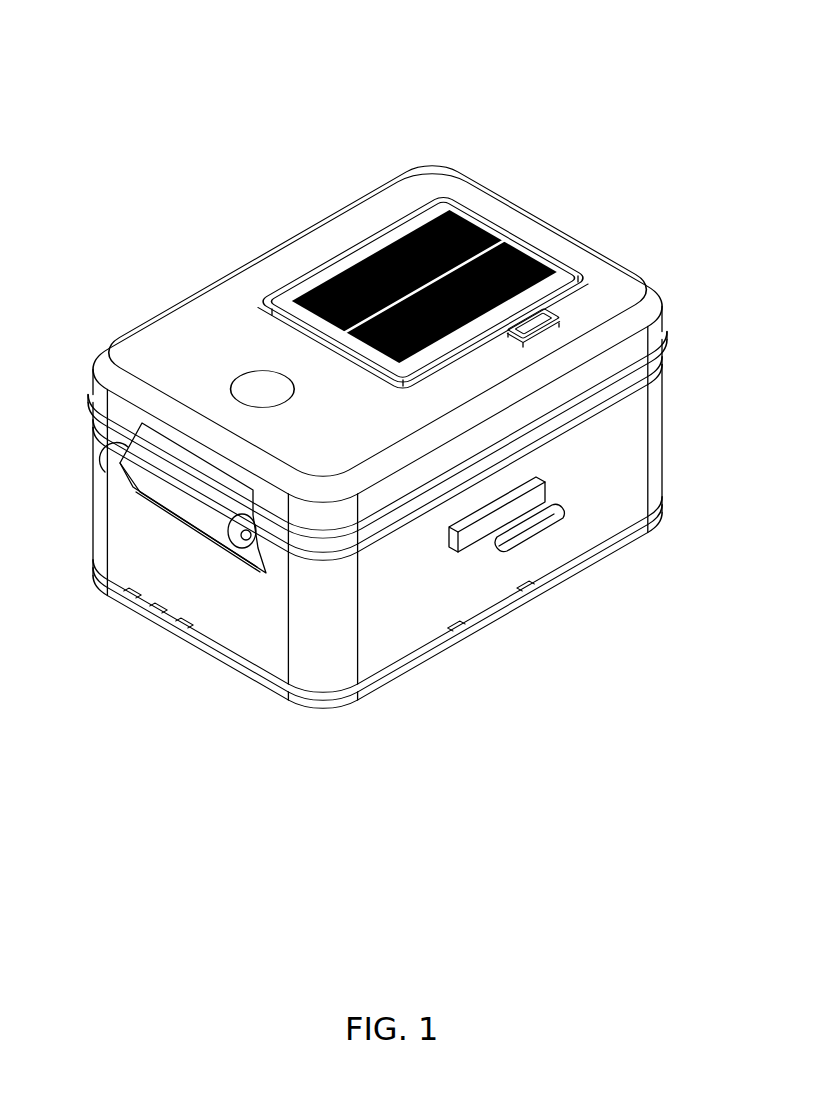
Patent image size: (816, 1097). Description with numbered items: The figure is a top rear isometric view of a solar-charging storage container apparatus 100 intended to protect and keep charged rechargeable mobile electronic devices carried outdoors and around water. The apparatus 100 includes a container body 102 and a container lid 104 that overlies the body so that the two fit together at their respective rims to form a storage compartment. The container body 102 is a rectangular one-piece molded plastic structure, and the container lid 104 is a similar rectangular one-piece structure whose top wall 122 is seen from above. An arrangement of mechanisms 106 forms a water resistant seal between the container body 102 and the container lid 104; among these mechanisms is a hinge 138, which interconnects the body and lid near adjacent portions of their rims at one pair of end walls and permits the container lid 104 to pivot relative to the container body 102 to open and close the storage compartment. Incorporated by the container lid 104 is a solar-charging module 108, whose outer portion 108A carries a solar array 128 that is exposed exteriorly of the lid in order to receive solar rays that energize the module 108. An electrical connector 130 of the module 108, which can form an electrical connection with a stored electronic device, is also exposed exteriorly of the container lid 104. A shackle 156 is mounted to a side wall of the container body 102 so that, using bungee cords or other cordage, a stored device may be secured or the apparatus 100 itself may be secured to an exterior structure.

The solar-charging storage container apparatus 100 is at (118, 73).
The container body 102 is at (412, 476).
The container lid 104 is at (347, 351).
The arrangement of mechanisms 106 is at (228, 587).
The solar-charging module 108 is at (430, 286).
The outer portion of the module 108A is at (387, 370).
The top wall 122 is at (230, 348).
The solar array 128 is at (527, 267).
The electrical connector 130 is at (553, 333).
The hinge 138 is at (123, 473).
The shackle 156 is at (575, 518).